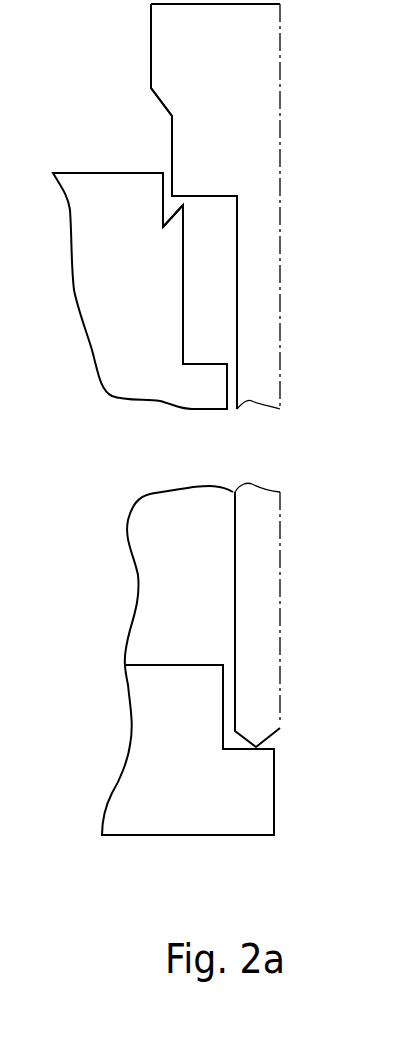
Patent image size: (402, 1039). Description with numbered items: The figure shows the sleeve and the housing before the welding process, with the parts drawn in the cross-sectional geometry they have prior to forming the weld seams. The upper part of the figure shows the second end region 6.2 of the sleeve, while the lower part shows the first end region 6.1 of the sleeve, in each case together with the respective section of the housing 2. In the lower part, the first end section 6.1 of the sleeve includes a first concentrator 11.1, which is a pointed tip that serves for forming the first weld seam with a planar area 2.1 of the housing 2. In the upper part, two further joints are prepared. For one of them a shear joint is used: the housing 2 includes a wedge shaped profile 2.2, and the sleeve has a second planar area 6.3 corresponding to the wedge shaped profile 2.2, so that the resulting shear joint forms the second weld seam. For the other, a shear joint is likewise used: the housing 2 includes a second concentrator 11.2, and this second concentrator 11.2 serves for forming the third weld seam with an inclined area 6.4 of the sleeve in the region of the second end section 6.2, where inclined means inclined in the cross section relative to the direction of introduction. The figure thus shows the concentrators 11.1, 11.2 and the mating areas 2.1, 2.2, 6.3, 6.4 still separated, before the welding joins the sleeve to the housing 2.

The housing 2 is at (92, 281).
The planar area 2.1 is at (243, 757).
The wedge shaped profile 2.2 is at (192, 209).
The first end region 6.1 is at (288, 546).
The second end region 6.2 is at (285, 167).
The second planar area 6.3 is at (212, 196).
The inclined area 6.4 is at (170, 95).
The first concentrator 11.1 is at (268, 738).
The second concentrator 11.2 is at (161, 158).